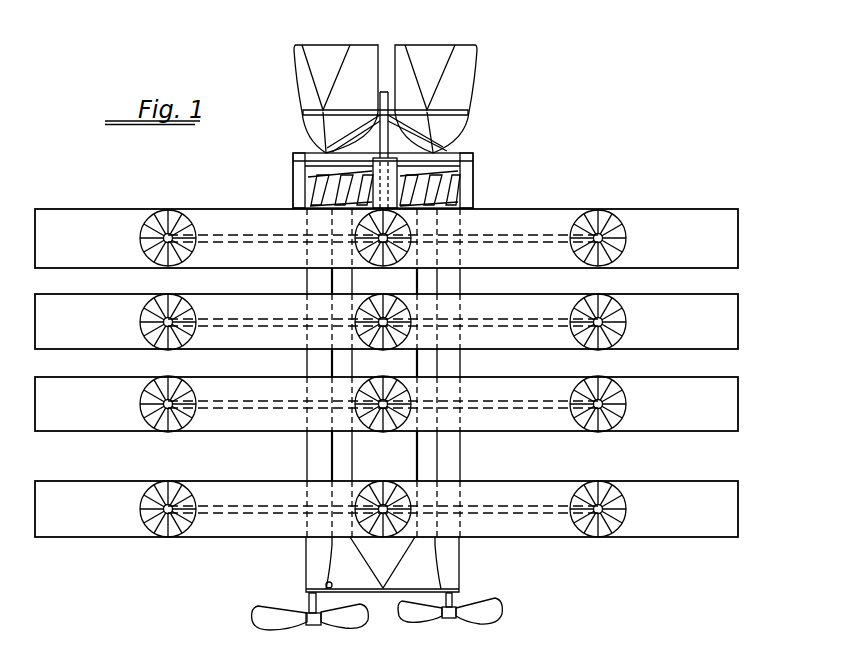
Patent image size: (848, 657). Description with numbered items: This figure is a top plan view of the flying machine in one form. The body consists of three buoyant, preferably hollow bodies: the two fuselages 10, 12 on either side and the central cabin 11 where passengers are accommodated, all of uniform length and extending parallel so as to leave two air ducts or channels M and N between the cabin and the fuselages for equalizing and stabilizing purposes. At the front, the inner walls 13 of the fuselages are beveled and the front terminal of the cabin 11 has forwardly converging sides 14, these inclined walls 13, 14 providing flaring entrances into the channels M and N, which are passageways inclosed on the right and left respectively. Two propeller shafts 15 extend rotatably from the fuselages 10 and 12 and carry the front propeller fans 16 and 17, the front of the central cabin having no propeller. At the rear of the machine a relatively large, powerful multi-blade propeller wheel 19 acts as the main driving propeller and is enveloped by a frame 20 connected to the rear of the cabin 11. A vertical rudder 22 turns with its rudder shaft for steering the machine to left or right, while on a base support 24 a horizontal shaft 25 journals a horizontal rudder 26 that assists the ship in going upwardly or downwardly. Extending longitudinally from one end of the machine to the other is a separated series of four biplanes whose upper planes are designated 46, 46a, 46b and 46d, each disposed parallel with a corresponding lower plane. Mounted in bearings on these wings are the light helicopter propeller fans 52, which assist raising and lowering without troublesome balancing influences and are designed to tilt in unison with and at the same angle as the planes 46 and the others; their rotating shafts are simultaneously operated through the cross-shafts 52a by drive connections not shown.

The fuselage 10 is at (316, 364).
The central cabin 11 is at (360, 285).
The fuselage 12 is at (450, 365).
The inner walls 13 is at (440, 580).
The forwardly converging sides 14 is at (418, 560).
The propeller shafts 15 is at (310, 607).
The propeller fan 16 is at (278, 623).
The propeller fan 17 is at (490, 618).
The multi-blade propeller wheel 19 is at (450, 185).
The frame 20 is at (467, 197).
The vertical rudder 22 is at (380, 108).
The base support 24 is at (462, 133).
The horizontal shaft 25 is at (471, 112).
The horizontal rudder 26 is at (467, 68).
The upper plane 46 is at (669, 218).
The upper plane 46a is at (722, 325).
The upper plane 46b is at (732, 408).
The upper plane 46d is at (732, 510).
The helicopter propeller fans 52 is at (190, 278).
The cross-shafts 52a is at (253, 410).
The air duct M is at (343, 452).
The air duct N is at (427, 452).